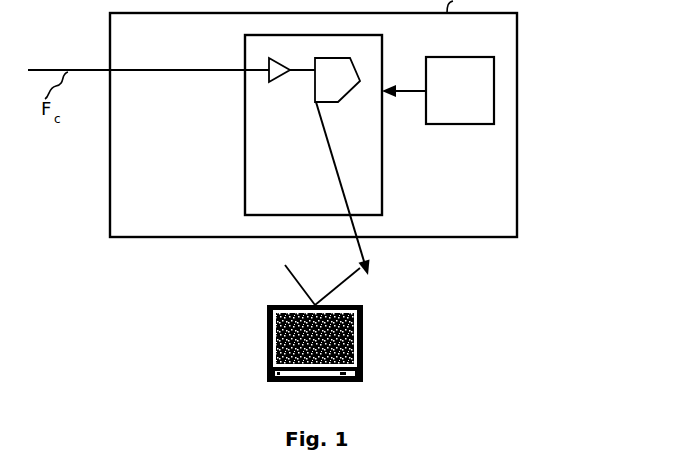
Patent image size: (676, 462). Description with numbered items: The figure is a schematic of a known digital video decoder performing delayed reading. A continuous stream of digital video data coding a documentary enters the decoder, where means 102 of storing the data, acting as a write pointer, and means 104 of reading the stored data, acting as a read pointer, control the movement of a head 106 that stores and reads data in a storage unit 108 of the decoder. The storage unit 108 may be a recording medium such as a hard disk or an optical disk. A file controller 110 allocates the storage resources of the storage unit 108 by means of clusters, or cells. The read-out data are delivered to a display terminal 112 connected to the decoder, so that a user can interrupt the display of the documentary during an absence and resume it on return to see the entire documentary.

The means of storing digital video data 102 is at (256, 70).
The means of reading stored data 104 is at (315, 185).
The head 106 is at (340, 78).
The storage unit 108 is at (382, 180).
The file controller 110 is at (438, 90).
The display terminal 112 is at (366, 326).